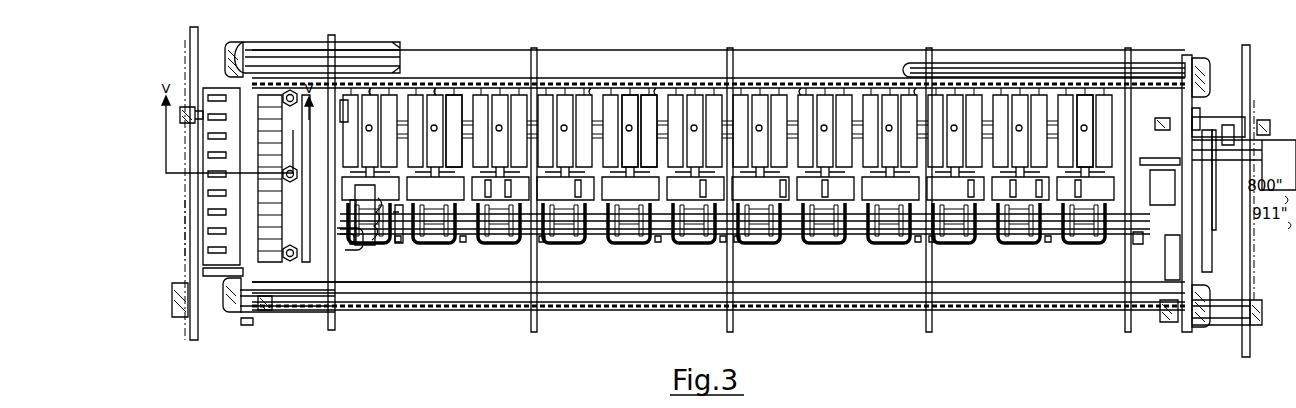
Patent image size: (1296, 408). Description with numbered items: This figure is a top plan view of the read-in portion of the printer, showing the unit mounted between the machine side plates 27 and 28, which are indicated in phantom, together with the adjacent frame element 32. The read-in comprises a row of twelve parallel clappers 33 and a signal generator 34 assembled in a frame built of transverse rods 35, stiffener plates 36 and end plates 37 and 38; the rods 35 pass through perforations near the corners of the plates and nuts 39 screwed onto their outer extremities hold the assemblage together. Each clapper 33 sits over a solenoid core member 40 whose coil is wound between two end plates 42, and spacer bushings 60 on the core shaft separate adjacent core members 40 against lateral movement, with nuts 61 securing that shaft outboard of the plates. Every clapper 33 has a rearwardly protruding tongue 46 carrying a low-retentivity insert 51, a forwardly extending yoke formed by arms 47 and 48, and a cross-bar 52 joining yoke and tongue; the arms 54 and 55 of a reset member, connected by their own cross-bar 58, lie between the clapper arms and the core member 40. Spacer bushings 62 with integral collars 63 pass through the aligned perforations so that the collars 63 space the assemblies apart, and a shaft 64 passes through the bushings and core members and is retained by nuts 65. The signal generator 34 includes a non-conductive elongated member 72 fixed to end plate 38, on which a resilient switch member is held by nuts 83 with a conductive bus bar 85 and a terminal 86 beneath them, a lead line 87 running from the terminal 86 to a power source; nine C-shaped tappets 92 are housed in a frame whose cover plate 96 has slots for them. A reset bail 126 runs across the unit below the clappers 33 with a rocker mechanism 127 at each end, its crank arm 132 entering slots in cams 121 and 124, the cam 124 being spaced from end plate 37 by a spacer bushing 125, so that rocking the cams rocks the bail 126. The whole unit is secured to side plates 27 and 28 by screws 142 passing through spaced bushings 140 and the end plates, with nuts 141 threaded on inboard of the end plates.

The side plate 27 is at (1252, 82).
The side plate 28 is at (187, 337).
The base frame 32 is at (788, 312).
The clapper 33 is at (448, 144).
The signal generator 34 is at (184, 228).
The transverse rod 35 is at (316, 55).
The stiffener plate 36 is at (530, 326).
The end plate 37 is at (1169, 264).
The end plate 38 is at (247, 326).
The nut 39 is at (232, 43).
The core member 40 is at (434, 242).
The end plate 42 is at (627, 92).
The tongue 46 is at (455, 94).
The arm 47 is at (422, 242).
The arm 48 is at (462, 244).
The insert 51 is at (432, 130).
The cross-bar 52 is at (728, 183).
The arm 54 is at (542, 244).
The arm 55 is at (507, 240).
The cross-bar 58 is at (491, 244).
The spacer bushing 60 is at (434, 88).
The nut 61 is at (778, 114).
The spacer bushing 62 is at (822, 210).
The collar 63 is at (1008, 198).
The shaft 64 is at (397, 241).
The nut 65 is at (1145, 242).
The elongated member 72 is at (292, 312).
The nut 83 is at (306, 256).
The bus bar 85 is at (342, 252).
The terminal 86 is at (285, 55).
The lead line 87 is at (347, 177).
The tappet 92 is at (206, 199).
The cover plate 96 is at (208, 191).
The cam 121 is at (352, 243).
The cam 124 is at (1210, 250).
The spacer bushing 125 is at (1168, 162).
The reset bail 126 is at (380, 194).
The rocker mechanism 127 is at (376, 242).
The crank arm 132 is at (1222, 180).
The bushing 140 is at (206, 84).
The nut 141 is at (266, 317).
The screw 142 is at (184, 104).